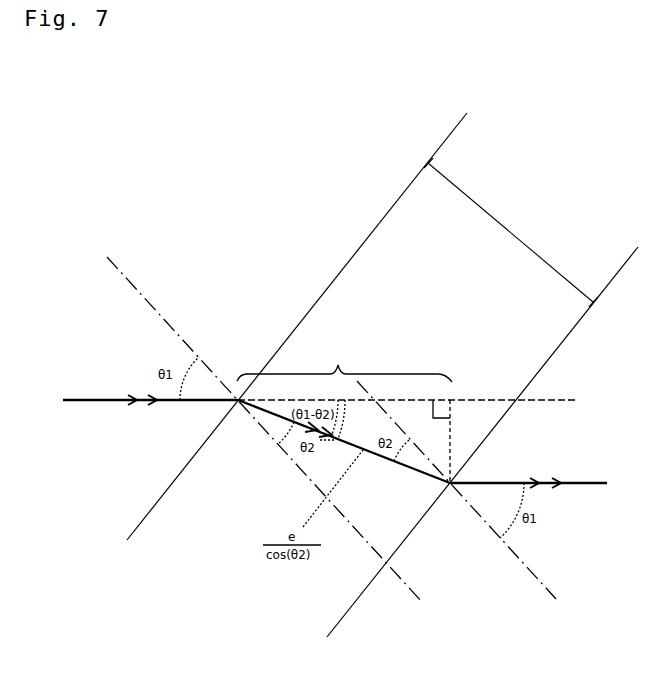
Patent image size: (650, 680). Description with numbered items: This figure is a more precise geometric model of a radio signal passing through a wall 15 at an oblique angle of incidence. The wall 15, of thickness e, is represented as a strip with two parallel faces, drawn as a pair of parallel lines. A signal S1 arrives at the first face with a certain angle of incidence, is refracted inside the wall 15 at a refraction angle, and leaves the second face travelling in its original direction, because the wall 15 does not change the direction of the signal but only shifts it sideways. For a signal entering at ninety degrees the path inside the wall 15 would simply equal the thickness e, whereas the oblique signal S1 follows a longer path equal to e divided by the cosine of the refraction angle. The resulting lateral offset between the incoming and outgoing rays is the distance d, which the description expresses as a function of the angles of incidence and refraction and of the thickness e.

The wall 15 is at (450, 133).
The signal S1 is at (264, 428).
The thickness e is at (511, 232).
The distance d is at (338, 365).